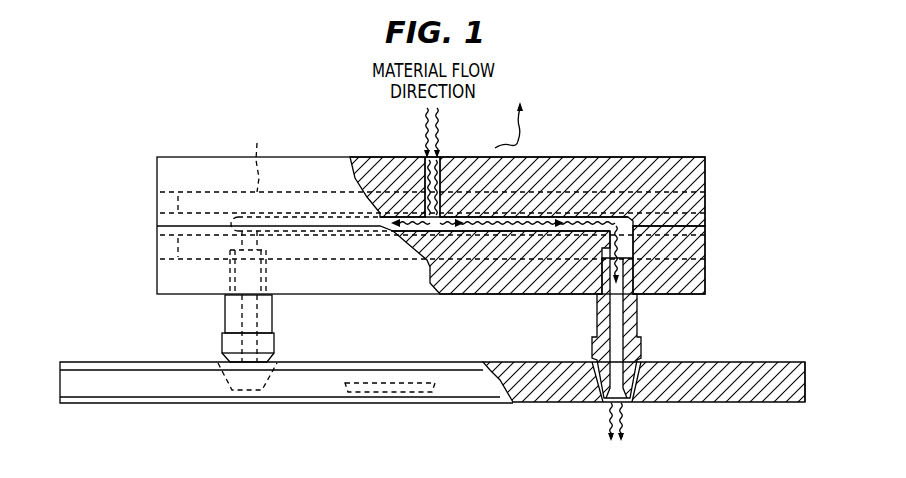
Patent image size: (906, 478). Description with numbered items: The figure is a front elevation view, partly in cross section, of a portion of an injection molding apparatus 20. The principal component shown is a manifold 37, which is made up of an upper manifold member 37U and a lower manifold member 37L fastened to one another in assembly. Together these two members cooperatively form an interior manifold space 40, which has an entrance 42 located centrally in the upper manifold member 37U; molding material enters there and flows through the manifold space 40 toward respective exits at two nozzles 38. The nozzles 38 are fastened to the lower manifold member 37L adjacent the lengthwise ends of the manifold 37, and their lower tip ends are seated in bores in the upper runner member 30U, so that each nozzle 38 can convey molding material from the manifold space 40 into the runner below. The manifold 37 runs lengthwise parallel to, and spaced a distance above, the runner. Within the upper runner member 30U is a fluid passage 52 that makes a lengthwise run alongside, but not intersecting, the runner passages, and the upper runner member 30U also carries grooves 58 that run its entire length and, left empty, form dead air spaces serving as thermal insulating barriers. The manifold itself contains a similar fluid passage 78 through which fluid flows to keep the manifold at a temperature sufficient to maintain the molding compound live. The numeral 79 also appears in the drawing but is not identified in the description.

The injection molding apparatus 20 is at (705, 126).
The manifold 37 is at (643, 158).
The upper manifold member 37U is at (170, 181).
The lower manifold member 37L is at (198, 264).
The nozzle 38 is at (272, 315).
The interior manifold space 40 is at (580, 220).
The entrance 42 is at (451, 157).
The fluid passage 52 is at (378, 382).
The groove 58 is at (174, 387).
The upper runner member 30U is at (82, 387).
The fluid passage 78 is at (259, 156).
The nozzle bore 79 is at (302, 258).